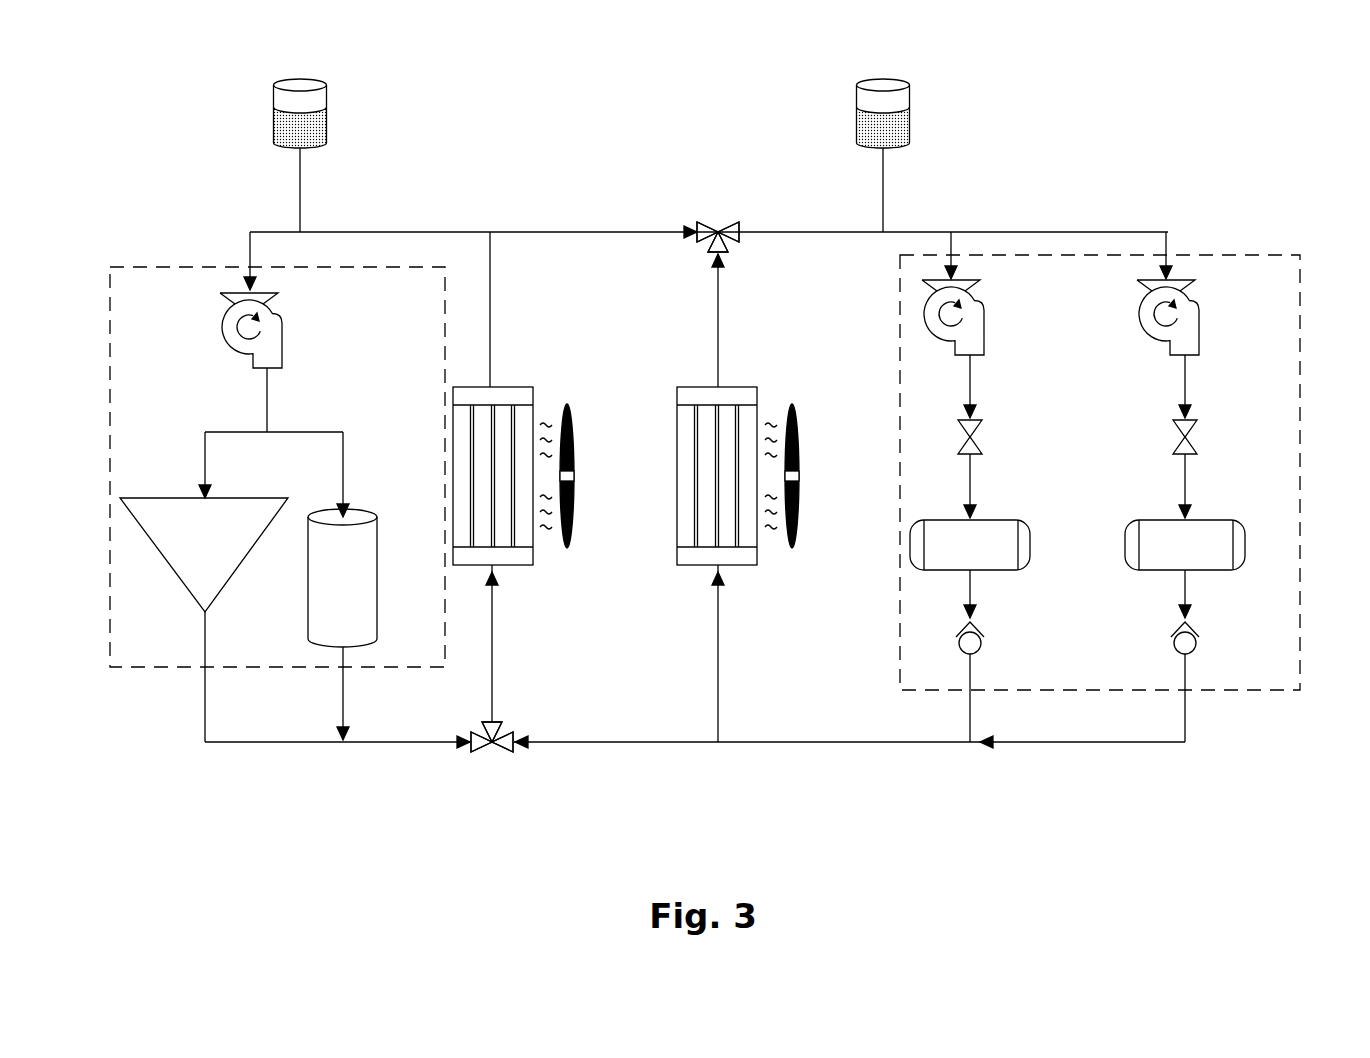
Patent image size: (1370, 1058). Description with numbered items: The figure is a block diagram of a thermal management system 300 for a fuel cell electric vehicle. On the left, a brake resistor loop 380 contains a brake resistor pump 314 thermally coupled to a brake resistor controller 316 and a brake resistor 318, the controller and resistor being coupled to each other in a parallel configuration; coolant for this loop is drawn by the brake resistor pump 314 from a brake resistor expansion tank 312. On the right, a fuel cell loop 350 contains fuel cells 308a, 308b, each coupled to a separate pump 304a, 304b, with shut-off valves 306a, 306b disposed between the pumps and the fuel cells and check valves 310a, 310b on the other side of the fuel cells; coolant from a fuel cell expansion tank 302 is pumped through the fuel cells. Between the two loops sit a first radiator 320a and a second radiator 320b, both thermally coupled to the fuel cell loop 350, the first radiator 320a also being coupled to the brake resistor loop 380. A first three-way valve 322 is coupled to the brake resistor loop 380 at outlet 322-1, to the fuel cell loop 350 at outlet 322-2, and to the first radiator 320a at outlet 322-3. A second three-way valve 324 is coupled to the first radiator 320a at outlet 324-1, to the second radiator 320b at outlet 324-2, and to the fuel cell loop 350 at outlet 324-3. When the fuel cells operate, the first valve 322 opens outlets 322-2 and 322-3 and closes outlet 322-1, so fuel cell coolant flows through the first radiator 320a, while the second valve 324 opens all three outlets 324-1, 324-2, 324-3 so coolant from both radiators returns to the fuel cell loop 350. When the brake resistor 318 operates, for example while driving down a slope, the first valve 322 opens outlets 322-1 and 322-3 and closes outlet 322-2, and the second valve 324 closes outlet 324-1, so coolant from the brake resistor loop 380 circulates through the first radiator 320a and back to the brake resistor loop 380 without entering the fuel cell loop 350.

The thermal management system 300 is at (1152, 93).
The fuel cell expansion tank 302 is at (882, 95).
The pump 304a is at (965, 295).
The pump 304b is at (1182, 295).
The shut-off valve 306a is at (965, 437).
The shut-off valve 306b is at (1185, 437).
The fuel cell 308a is at (932, 568).
The fuel cell 308b is at (1152, 520).
The check valve 310a is at (968, 652).
The check valve 310b is at (1182, 652).
The brake resistor expansion tank 312 is at (312, 95).
The brake resistor pump 314 is at (250, 310).
The brake resistor controller 316 is at (205, 572).
The brake resistor 318 is at (338, 641).
The first radiator 320a is at (520, 392).
The second radiator 320b is at (690, 555).
The first 3-way valve 322 is at (505, 788).
The outlet 322-1 is at (475, 745).
The outlet 322-2 is at (512, 735).
The outlet 322-3 is at (485, 725).
The second 3-way valve 324 is at (722, 180).
The outlet 324-1 is at (703, 230).
The outlet 324-2 is at (712, 252).
The outlet 324-3 is at (745, 240).
The fuel cell loop 350 is at (1275, 255).
The brake resistor loop 380 is at (160, 265).